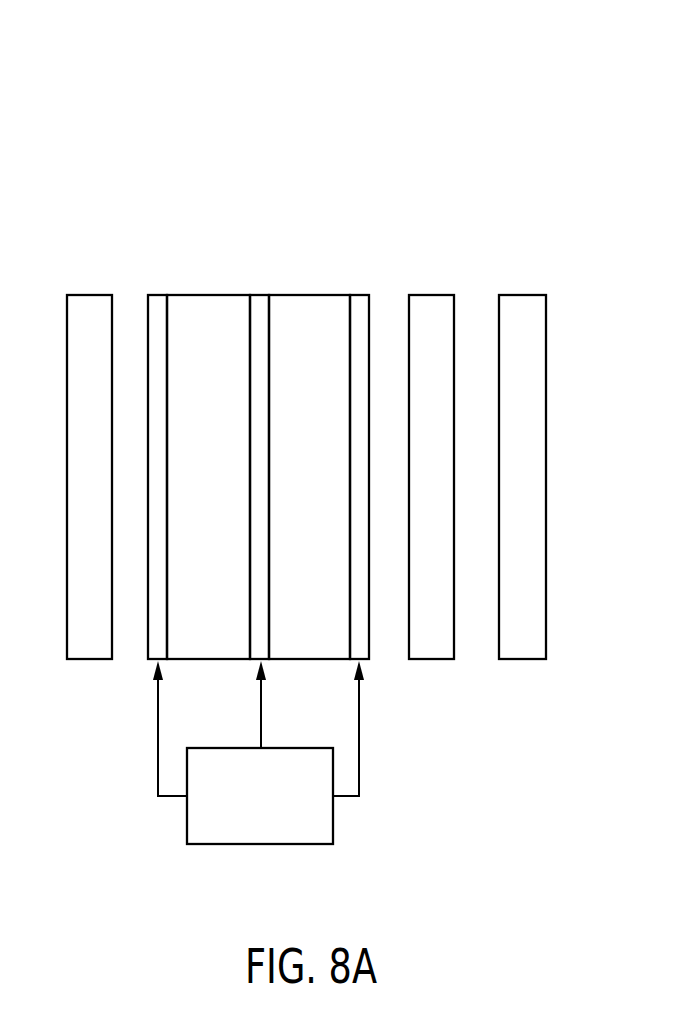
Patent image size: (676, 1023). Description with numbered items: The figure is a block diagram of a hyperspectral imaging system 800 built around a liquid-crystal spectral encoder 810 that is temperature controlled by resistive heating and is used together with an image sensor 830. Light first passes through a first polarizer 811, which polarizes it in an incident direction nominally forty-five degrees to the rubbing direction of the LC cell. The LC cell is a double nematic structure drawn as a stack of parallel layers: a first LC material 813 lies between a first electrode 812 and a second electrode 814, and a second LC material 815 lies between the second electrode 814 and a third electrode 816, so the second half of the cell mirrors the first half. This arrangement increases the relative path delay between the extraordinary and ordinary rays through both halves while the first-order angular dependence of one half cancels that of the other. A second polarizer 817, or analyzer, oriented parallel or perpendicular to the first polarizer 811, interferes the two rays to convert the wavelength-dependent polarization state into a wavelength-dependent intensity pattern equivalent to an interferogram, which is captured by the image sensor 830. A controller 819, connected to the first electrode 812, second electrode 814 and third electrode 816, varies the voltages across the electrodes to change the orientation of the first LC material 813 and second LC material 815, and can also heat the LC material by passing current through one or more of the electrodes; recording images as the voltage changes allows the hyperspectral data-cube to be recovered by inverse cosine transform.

The hyperspectral imaging system 800 is at (262, 87).
The LC spectral encoder 810 is at (455, 203).
The first polarizer 811 is at (90, 296).
The first electrode 812 is at (157, 302).
The first LC material 813 is at (210, 302).
The second electrode 814 is at (262, 302).
The second LC material 815 is at (310, 302).
The third electrode 816 is at (358, 302).
The second polarizer 817 is at (432, 295).
The controller 819 is at (299, 748).
The image sensor 830 is at (522, 295).